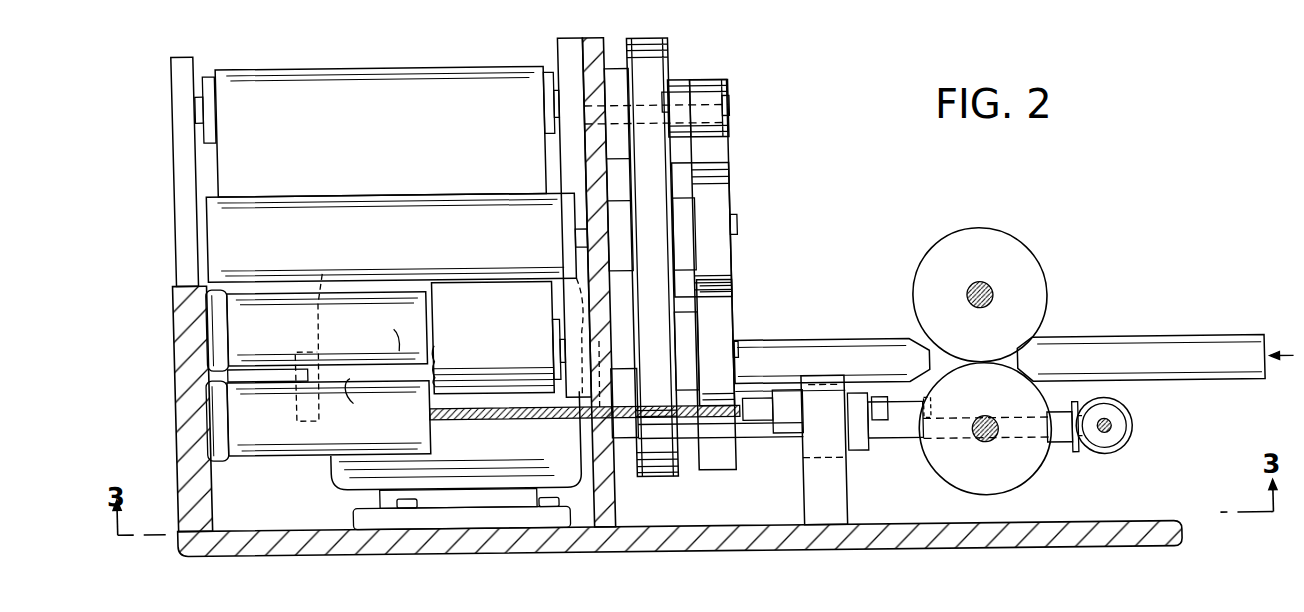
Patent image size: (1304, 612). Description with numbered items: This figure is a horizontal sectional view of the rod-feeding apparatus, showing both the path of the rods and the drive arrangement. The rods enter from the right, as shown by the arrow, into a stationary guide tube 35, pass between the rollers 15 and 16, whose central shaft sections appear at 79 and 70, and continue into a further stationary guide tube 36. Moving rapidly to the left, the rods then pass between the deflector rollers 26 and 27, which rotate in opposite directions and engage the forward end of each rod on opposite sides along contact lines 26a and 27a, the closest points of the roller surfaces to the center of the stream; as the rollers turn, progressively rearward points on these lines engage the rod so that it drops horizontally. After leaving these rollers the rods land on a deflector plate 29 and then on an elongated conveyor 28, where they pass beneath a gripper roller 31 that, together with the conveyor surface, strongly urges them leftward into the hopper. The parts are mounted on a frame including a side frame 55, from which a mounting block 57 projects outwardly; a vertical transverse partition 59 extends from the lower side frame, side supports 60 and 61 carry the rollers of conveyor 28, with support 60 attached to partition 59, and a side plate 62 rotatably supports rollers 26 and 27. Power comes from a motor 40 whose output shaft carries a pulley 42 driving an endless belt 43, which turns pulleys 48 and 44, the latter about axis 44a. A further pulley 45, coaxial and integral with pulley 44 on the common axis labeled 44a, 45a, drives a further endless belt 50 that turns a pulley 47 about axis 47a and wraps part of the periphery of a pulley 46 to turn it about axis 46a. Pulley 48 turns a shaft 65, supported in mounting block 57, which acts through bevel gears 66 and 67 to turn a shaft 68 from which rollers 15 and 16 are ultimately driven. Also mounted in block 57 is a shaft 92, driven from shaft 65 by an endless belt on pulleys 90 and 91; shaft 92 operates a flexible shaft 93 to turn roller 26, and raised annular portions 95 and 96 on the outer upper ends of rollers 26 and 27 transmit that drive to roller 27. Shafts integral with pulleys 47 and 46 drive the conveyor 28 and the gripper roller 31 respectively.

The roller 15 is at (1041, 266).
The roller 16 is at (1016, 472).
The deflector roller 26 is at (283, 443).
The contact line 26a is at (369, 399).
The deflector roller 27 is at (423, 310).
The contact line 27a is at (398, 345).
The elongated conveyor 28 is at (226, 148).
The deflector plate 29 is at (435, 358).
The gripper roller 31 is at (413, 199).
The stationary guide tube 35 is at (1201, 346).
The further stationary guide tube 36 is at (858, 344).
The motor 40 is at (328, 482).
The pulley 42 is at (637, 334).
The endless belt 43 is at (659, 75).
The pulley 44 is at (670, 41).
The axis 44a is at (739, 116).
The further pulley 45 is at (734, 95).
The sprocket rim 45a is at (726, 105).
The pulley 46 is at (733, 190).
The axis 46a is at (740, 230).
The pulley 47 is at (733, 316).
The axis 47a is at (737, 344).
The pulley 48 is at (669, 477).
The endless belt 50 is at (722, 153).
The side frame 55 is at (693, 551).
The mounting block 57 is at (797, 491).
The vertical transverse partition 59 is at (596, 32).
The side support 60 is at (576, 34).
The side support 61 is at (189, 57).
The side plate 62 is at (176, 366).
The shaft 65 is at (893, 452).
The bevel gear 66 is at (1071, 458).
The bevel gear 67 is at (1126, 443).
The shaft 68 is at (1110, 426).
The roller shaft 70 is at (983, 421).
The roller shaft 79 is at (992, 300).
The pulley 90 is at (870, 456).
The pulley 91 is at (843, 395).
The shaft 92 is at (912, 400).
The flexible shaft 93 is at (524, 418).
The raised annular portion 95 is at (227, 410).
The raised annular portion 96 is at (231, 322).